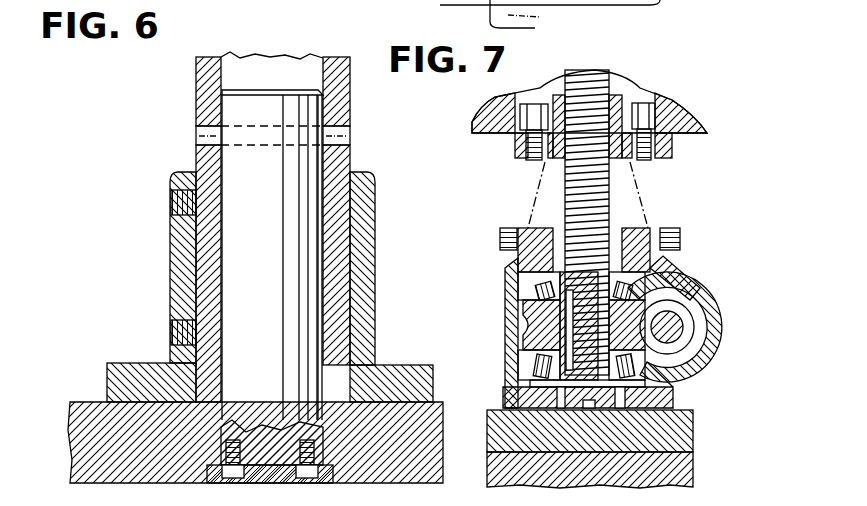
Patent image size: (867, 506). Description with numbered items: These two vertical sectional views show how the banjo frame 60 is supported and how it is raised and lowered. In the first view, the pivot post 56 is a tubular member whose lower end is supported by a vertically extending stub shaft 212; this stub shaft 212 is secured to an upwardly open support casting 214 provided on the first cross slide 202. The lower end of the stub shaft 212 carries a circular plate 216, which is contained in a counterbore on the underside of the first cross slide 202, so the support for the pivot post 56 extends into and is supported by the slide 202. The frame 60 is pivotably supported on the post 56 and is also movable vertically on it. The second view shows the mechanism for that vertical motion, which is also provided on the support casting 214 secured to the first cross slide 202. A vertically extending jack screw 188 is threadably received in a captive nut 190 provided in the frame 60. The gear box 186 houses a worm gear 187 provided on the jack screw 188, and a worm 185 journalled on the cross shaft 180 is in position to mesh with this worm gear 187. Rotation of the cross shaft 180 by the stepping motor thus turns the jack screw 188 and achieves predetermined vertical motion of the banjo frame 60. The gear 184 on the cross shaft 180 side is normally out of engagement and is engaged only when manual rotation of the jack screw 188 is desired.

In FIG. 6, the pivot post 56 is at (205, 108).
In FIG. 7, the banjo shaped frame 60 is at (680, 112).
In FIG. 7, the cross shaft 180 is at (670, 328).
In FIG. 7, the second gear 184 is at (550, 22).
In FIG. 7, the worm 185 is at (677, 312).
In FIG. 7, the gear box 186 is at (672, 303).
In FIG. 7, the worm gear 187 is at (530, 325).
In FIG. 7, the jack screw 188 is at (565, 188).
In FIG. 7, the captive nut 190 is at (665, 150).
In FIG. 6, the first cross slide 202 is at (95, 405).
In FIG. 7, the first cross slide 202 is at (680, 470).
In FIG. 6, the stub shaft 212 is at (250, 90).
In FIG. 6, the support casting 214 is at (183, 262).
In FIG. 7, the support casting 214 is at (672, 432).
In FIG. 6, the circular plate 216 is at (268, 430).